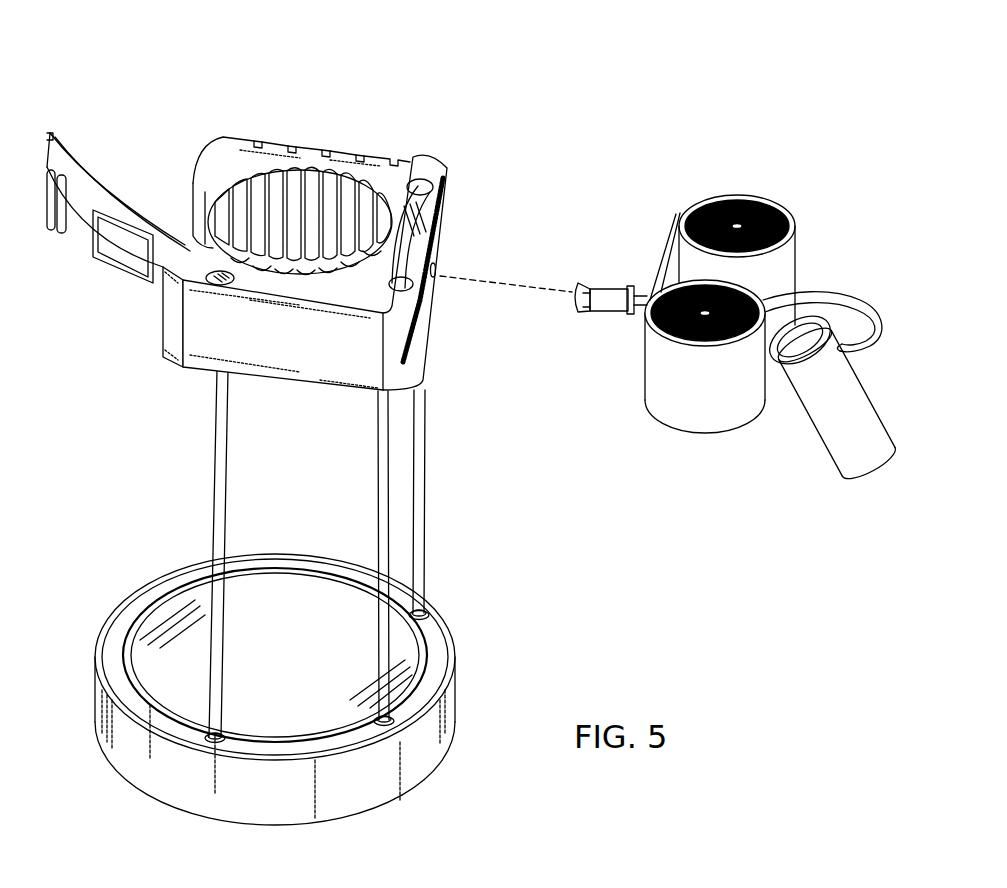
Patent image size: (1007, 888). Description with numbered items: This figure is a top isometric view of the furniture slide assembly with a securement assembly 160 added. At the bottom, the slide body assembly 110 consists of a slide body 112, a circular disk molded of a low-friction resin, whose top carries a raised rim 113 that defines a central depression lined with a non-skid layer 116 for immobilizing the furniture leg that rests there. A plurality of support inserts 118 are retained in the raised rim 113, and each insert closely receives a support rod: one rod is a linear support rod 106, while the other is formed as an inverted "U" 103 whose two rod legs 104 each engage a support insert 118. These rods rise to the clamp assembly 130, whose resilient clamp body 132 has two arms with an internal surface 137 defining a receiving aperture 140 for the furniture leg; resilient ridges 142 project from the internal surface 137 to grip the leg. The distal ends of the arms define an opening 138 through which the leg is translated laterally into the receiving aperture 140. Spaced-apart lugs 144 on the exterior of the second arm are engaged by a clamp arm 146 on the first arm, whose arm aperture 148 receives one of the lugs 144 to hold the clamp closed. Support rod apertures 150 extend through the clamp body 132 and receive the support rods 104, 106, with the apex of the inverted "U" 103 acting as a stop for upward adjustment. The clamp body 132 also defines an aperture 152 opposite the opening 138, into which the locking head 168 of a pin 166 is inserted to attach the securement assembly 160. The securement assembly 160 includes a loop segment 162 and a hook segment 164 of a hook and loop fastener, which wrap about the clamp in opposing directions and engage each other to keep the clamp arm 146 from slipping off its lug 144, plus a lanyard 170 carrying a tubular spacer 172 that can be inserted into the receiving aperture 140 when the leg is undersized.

The inverted "U" 103 is at (408, 195).
The rod leg 104 is at (424, 536).
The support rod 106 is at (216, 466).
The slide body assembly 110 is at (482, 76).
The slide body 112 is at (400, 797).
The raised rim 113 is at (143, 602).
The non-skid layer 116 is at (287, 660).
The support insert 118 is at (430, 620).
The clamp assembly 130 is at (228, 138).
The clamp body 132 is at (443, 253).
The internal surface 137 is at (333, 210).
The opening 138 is at (160, 198).
The receiving aperture 140 is at (296, 190).
The resilient ridges 142 is at (280, 207).
The lugs 144 is at (360, 150).
The clamp arm 146 is at (87, 140).
The arm aperture 148 is at (133, 252).
The support rod apertures 150 is at (205, 278).
The aperture 152 is at (438, 268).
The securement assembly 160 is at (755, 170).
The loop segment 162 is at (690, 432).
The hook segment 164 is at (795, 216).
The pin 166 is at (623, 286).
The locking head 168 is at (589, 283).
The lanyard 170 is at (846, 291).
The spacer 172 is at (812, 432).